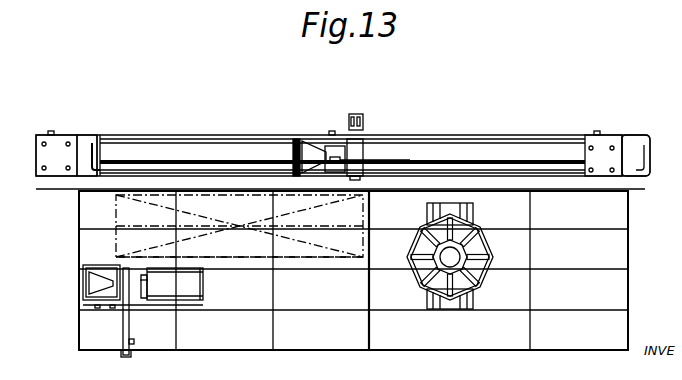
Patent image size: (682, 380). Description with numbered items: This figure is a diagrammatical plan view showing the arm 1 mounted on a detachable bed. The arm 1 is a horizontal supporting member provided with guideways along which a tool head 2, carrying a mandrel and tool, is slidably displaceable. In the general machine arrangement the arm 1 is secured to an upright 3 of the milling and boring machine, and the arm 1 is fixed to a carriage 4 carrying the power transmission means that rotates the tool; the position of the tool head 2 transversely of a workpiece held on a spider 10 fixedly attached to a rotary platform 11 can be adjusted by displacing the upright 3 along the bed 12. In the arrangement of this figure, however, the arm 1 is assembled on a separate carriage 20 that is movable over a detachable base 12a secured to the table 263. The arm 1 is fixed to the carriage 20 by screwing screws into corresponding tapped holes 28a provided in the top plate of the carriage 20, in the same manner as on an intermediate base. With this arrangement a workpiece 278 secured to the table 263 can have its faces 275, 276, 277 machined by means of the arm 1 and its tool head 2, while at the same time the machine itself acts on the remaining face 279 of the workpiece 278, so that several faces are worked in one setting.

The arm 1 is at (100, 283).
The tool head 2 is at (128, 288).
The upright 3 is at (312, 150).
The carriage 4 is at (372, 139).
The spider 10 is at (490, 275).
The rotary platform 11 is at (468, 301).
The bed 12 is at (438, 159).
The detachable base 12a is at (183, 284).
The carriage 20 is at (91, 150).
The tapped holes 28a is at (68, 142).
The table 263 is at (356, 333).
The face of workpiece 275 is at (295, 260).
The face of workpiece 276 is at (110, 214).
The face of workpiece 277 is at (365, 244).
The workpiece 278 is at (354, 214).
The face of workpiece 279 is at (216, 192).